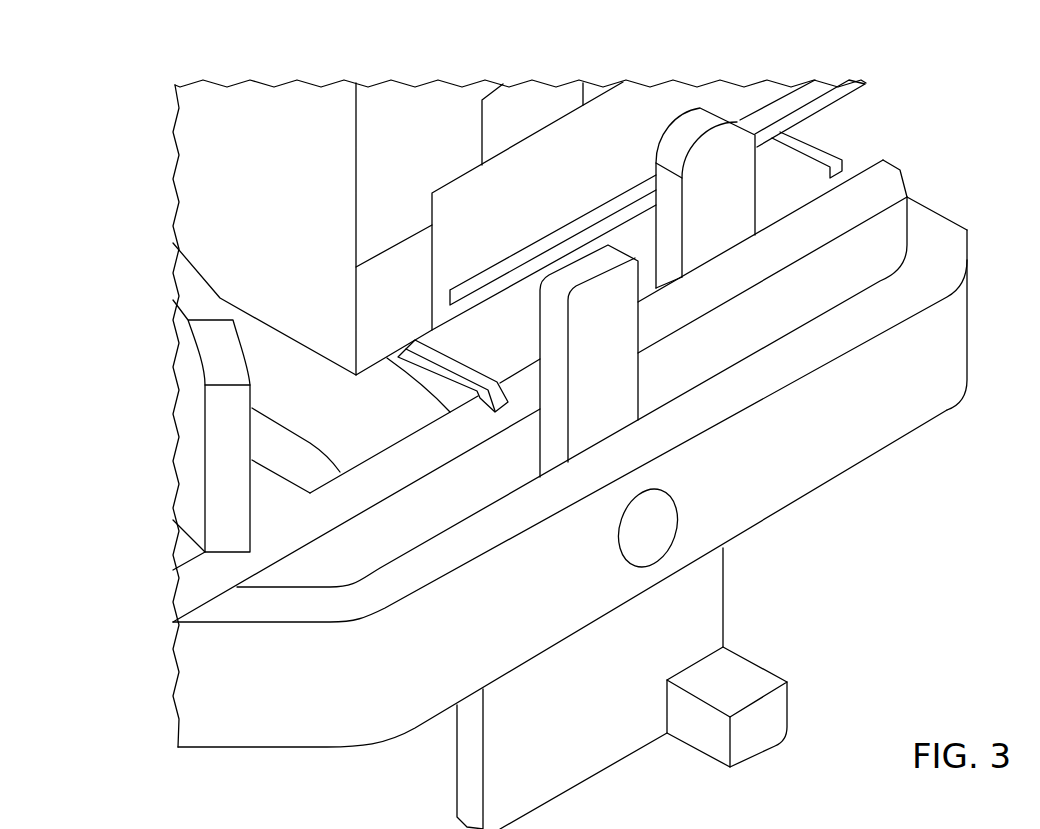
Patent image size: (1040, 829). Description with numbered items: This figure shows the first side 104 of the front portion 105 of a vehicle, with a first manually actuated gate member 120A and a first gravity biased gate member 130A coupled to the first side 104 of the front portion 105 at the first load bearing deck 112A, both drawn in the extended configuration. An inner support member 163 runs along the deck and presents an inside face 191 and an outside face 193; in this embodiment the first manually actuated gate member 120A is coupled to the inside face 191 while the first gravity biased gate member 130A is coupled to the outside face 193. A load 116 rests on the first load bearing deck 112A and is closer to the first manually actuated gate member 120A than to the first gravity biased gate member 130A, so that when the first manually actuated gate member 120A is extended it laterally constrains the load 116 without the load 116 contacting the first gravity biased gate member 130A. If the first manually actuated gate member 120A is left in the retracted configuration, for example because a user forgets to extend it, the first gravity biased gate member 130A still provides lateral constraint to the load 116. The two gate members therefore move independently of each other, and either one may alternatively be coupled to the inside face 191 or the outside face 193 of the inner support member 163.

The first side 104 is at (912, 157).
The front portion 105 is at (326, 72).
The first load bearing deck 112A is at (152, 535).
The load 116 is at (375, 300).
The first manually actuated gate member 120A is at (718, 145).
The first gravity biased gate member 130A is at (446, 755).
The inner support member 163 is at (920, 178).
The inside face 191 is at (861, 162).
The outside face 193 is at (827, 290).